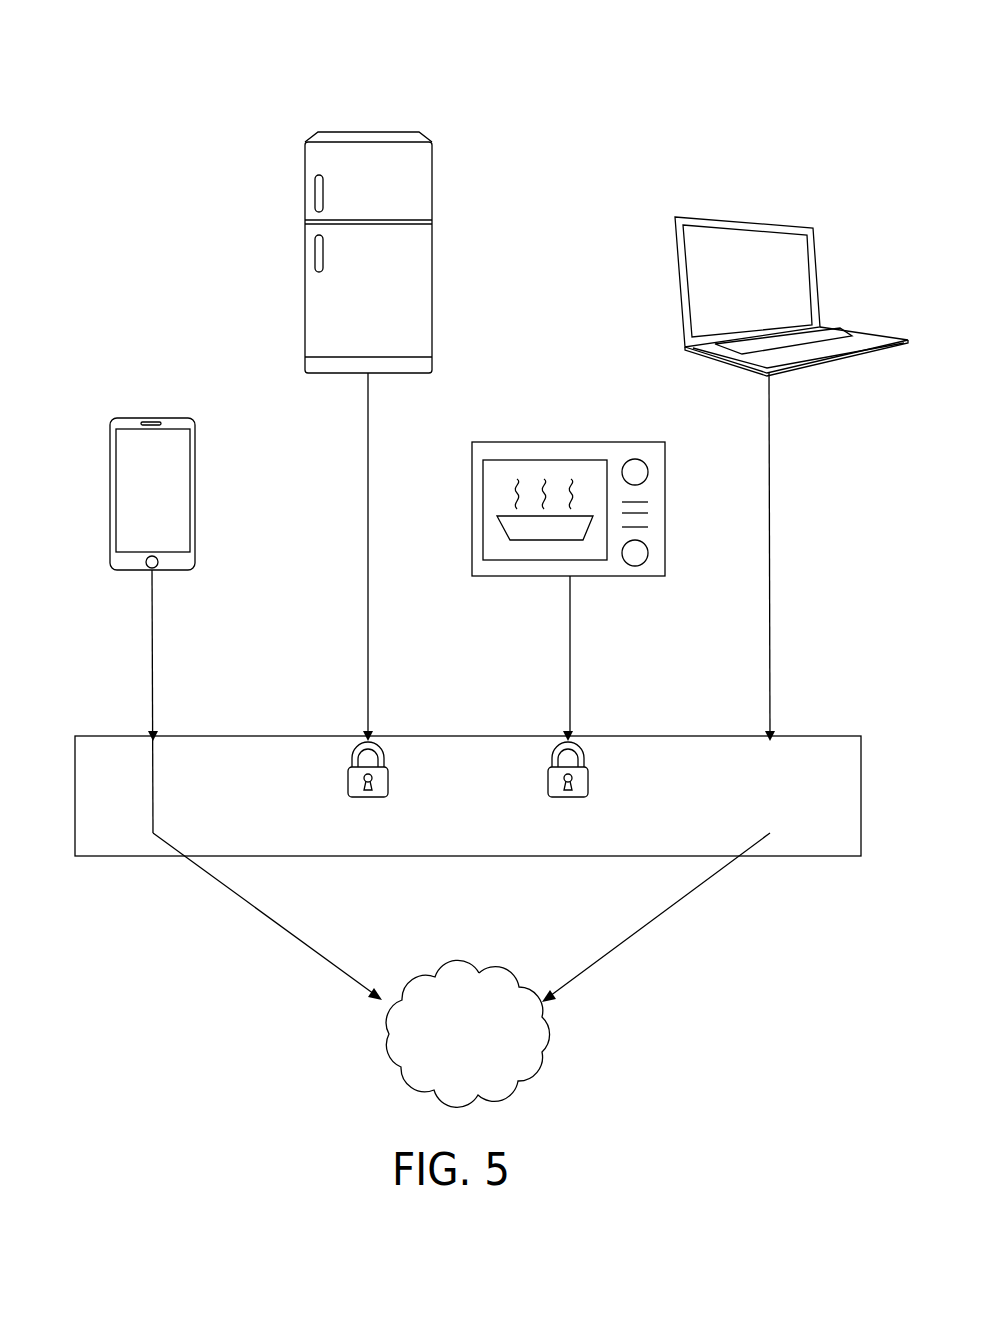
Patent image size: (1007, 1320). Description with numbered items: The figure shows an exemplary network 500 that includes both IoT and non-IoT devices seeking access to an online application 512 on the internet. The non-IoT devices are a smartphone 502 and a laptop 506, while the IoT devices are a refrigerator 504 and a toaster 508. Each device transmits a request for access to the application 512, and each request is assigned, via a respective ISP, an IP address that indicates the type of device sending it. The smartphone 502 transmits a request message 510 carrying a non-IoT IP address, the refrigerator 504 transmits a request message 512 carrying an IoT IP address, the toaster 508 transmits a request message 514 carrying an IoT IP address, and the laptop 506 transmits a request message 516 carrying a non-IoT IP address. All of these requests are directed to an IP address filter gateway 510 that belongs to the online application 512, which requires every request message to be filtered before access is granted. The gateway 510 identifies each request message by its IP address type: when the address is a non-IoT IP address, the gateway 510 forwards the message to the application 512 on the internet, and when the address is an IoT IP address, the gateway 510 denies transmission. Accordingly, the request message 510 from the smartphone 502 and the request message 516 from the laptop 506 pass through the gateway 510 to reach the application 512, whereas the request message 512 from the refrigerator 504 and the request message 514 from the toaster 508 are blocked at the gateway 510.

The network 500 is at (130, 84).
The smartphone 502 is at (195, 494).
The refrigerator 504 is at (432, 260).
The laptop 506 is at (820, 272).
The toaster 508 is at (665, 511).
The IP address filter gateway 510 is at (153, 645).
The online application 512 is at (368, 537).
The request message 514 is at (570, 641).
The request message 516 is at (770, 565).